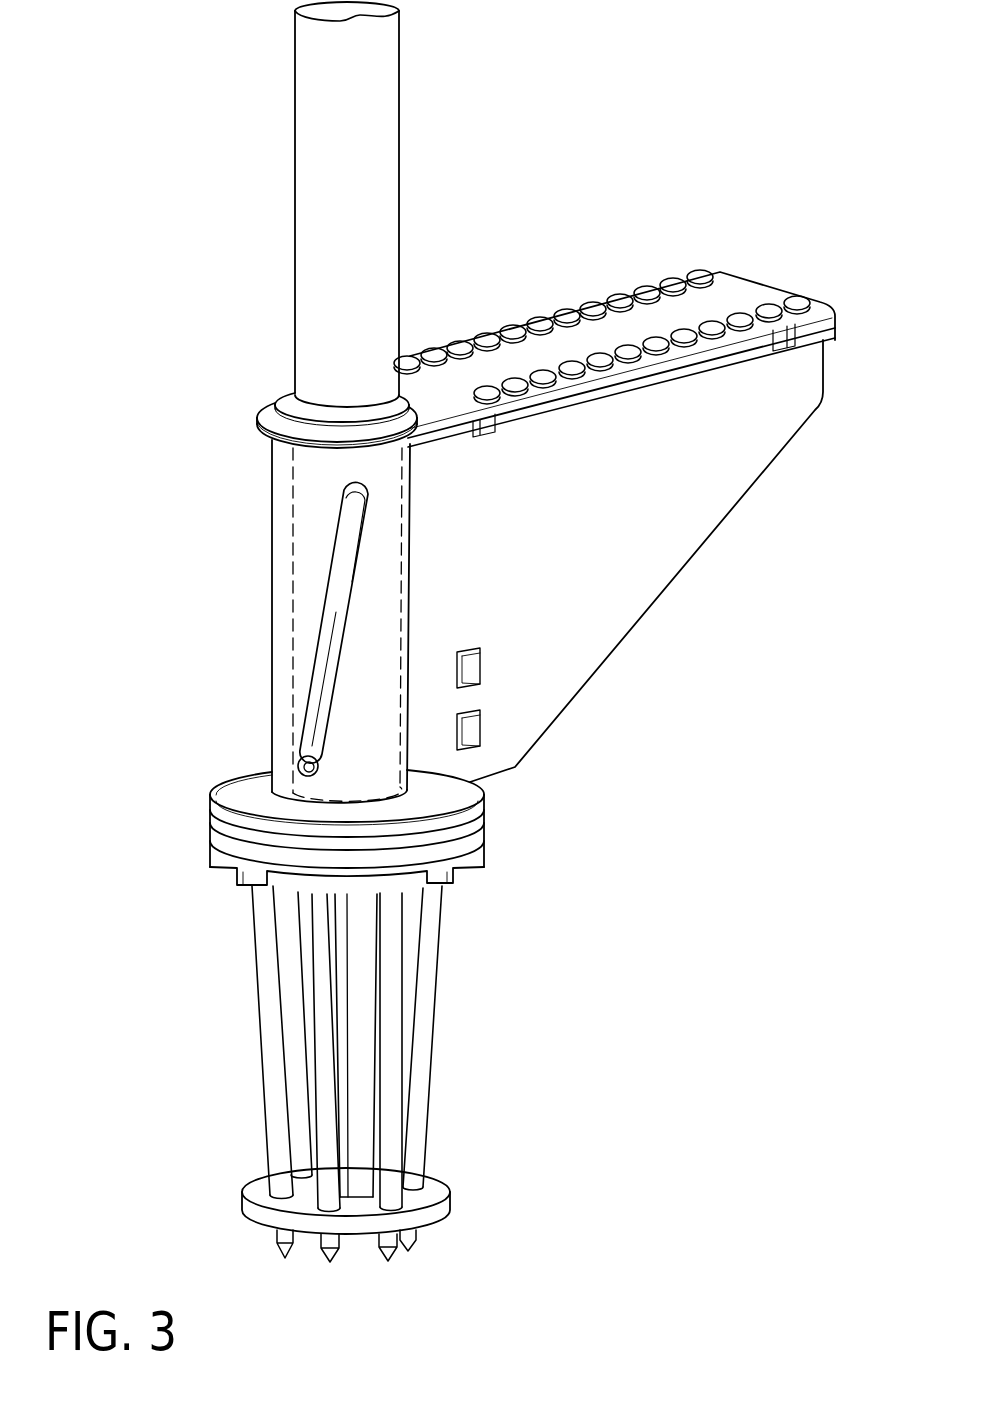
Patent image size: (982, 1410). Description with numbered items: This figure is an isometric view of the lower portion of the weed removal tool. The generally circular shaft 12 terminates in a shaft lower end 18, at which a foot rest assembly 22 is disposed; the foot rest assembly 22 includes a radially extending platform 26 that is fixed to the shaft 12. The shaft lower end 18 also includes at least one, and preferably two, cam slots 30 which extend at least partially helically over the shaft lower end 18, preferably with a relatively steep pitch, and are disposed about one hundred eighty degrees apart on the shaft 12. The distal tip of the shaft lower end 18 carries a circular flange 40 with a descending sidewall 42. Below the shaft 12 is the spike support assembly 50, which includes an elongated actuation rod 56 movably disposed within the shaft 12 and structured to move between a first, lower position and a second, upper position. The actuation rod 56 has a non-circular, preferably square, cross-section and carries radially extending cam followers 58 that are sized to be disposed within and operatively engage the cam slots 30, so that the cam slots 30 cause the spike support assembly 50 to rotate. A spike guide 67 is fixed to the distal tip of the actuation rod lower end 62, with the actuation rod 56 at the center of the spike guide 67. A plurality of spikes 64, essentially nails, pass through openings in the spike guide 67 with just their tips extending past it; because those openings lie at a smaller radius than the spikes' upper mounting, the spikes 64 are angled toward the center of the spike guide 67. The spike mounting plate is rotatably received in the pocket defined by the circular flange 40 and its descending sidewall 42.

The shaft 12 is at (317, 210).
The shaft lower end 18 is at (387, 800).
The foot rest assembly 22 is at (597, 593).
The platform 26 is at (620, 323).
The cam slots 30 is at (337, 618).
The circular flange 40 is at (250, 777).
The descending sidewall 42 is at (230, 830).
The spike support assembly 50 is at (172, 277).
The actuation rod 56 is at (362, 1042).
The cam followers 58 is at (298, 763).
The actuation rod lower end 62 is at (357, 1197).
The spikes 64 is at (307, 1097).
The spike guide 67 is at (243, 1210).